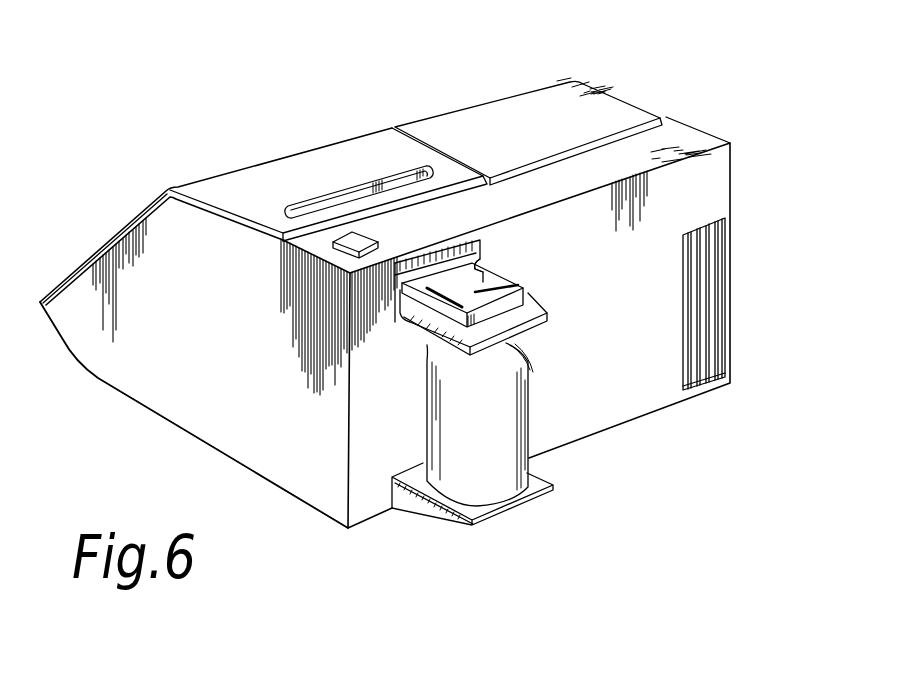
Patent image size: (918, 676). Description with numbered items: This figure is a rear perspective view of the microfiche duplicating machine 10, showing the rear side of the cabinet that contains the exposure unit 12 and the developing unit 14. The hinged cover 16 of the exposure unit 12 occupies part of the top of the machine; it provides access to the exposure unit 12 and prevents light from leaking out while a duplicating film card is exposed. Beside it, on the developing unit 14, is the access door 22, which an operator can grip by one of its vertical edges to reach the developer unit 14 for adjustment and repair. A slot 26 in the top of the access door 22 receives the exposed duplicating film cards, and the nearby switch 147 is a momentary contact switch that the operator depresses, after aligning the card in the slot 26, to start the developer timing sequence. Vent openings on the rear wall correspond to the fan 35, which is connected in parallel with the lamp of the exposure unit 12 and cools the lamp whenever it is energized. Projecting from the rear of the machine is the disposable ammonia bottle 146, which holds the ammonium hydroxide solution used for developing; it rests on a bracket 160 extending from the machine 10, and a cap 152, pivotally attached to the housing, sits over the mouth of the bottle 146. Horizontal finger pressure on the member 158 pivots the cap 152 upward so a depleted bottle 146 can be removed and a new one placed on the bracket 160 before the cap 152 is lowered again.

The microfiche duplicating machine 10 is at (441, 67).
The exposure unit 12 is at (654, 96).
The developing unit 14 is at (306, 136).
The hinged cover 16 is at (566, 100).
The access door 22 is at (218, 188).
The slot 26 is at (322, 203).
The fan 35 is at (720, 303).
The ammonia bottle 146 is at (516, 402).
The switch 147 is at (362, 240).
The cap 152 is at (486, 277).
The member 158 is at (480, 247).
The bracket 160 is at (433, 503).